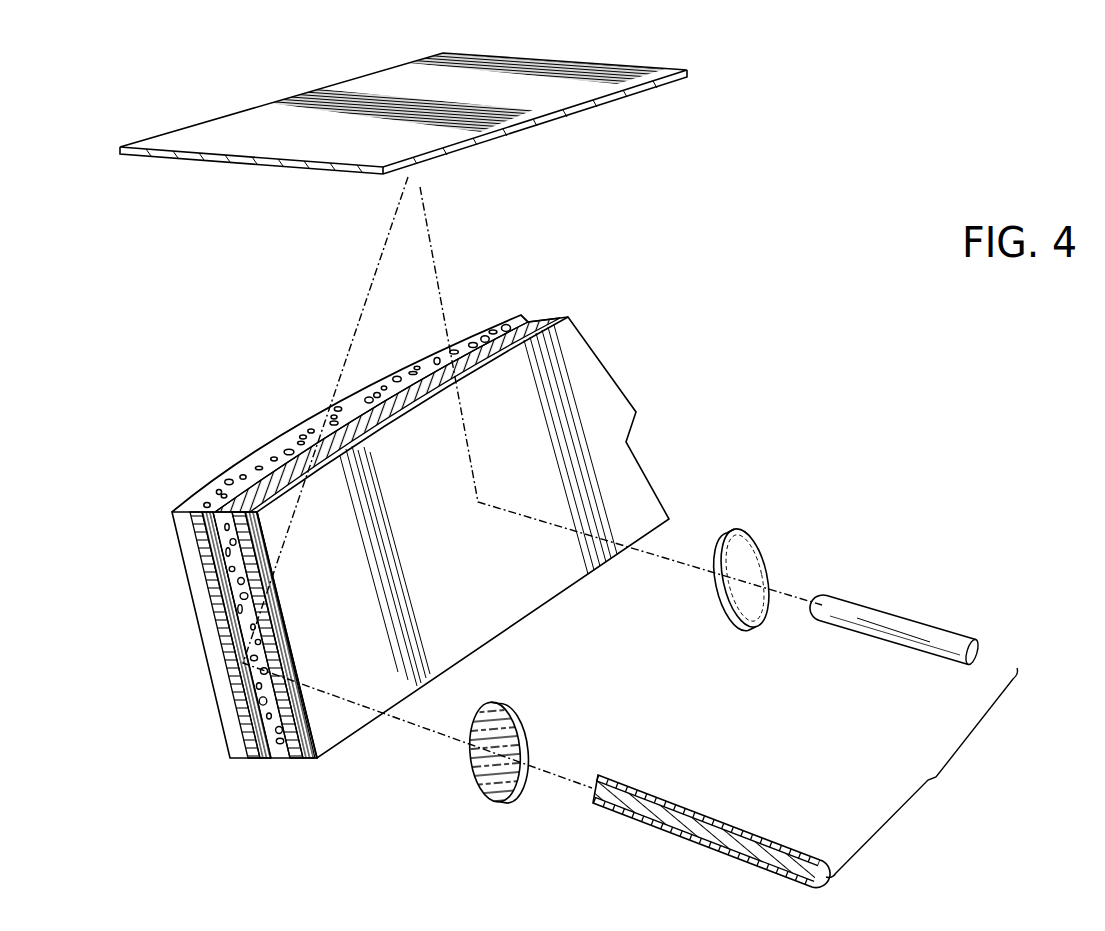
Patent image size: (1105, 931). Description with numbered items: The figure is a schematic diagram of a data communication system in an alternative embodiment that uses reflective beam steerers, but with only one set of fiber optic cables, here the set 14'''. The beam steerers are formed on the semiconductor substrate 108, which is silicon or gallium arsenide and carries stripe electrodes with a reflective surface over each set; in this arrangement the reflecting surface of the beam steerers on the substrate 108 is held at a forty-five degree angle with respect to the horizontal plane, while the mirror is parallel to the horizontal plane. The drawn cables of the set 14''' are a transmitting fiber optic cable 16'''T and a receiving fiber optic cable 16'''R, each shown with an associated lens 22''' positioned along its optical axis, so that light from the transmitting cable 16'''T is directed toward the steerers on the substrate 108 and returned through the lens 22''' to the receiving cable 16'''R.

The semiconductor substrate 108 is at (228, 486).
The lens 22''' is at (648, 660).
The fiber optic cable 16'''R is at (895, 623).
The fiber optic cable 16'''T is at (708, 831).
The set of fiber optic cables 14''' is at (922, 773).